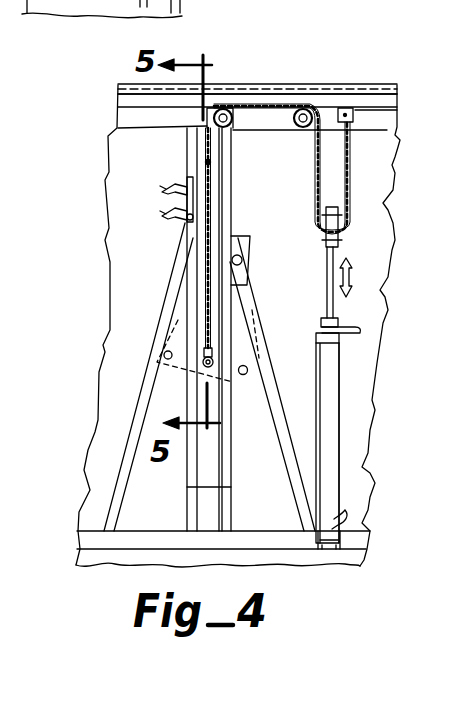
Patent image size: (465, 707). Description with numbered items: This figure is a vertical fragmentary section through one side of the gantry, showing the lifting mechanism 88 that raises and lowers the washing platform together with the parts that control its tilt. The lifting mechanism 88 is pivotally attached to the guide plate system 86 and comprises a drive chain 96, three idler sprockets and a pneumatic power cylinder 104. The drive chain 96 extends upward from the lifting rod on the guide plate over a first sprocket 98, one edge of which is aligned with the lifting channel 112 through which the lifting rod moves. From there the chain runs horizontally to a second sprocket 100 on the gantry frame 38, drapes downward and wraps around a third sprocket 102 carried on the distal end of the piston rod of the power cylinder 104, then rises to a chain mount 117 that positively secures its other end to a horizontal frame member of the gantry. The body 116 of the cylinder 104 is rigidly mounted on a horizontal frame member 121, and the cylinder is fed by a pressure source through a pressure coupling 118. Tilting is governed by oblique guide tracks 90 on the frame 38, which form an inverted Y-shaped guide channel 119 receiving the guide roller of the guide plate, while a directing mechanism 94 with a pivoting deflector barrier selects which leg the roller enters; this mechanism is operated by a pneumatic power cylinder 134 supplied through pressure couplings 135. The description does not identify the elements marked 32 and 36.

The overhead rail 32 is at (115, 85).
The track 36 is at (261, 88).
The gantry frame 38 is at (220, 93).
The second sprocket 100 is at (347, 109).
The chain mount 117 is at (363, 108).
The drive chain 96 is at (350, 158).
The first sprocket 98 is at (205, 121).
The pressure couplings 135 is at (175, 187).
The pneumatic power cylinder 134 is at (178, 214).
The directing mechanism 94 is at (179, 216).
The guide plate system 86 is at (166, 329).
The guide tracks 90 is at (130, 435).
The lifting channel 112 is at (222, 492).
The lifting mechanism 88 is at (262, 443).
The third sprocket 102 is at (343, 219).
The inverted Y-shaped guide channel 119 is at (342, 262).
The pressure coupling 118 is at (351, 325).
The pneumatic power cylinder 104 is at (345, 366).
The body 116 is at (336, 399).
The horizontal frame member 121 is at (362, 531).